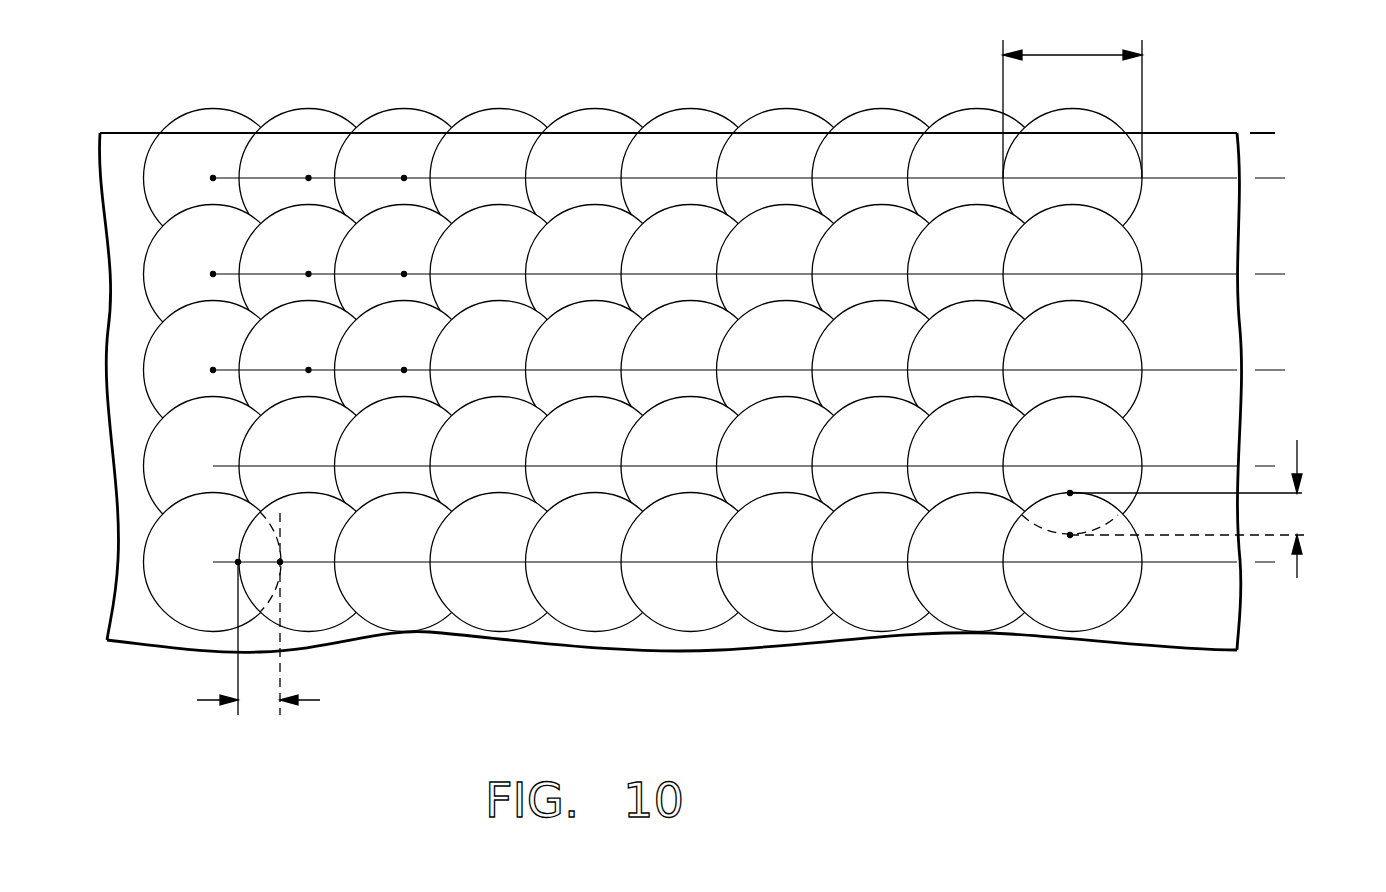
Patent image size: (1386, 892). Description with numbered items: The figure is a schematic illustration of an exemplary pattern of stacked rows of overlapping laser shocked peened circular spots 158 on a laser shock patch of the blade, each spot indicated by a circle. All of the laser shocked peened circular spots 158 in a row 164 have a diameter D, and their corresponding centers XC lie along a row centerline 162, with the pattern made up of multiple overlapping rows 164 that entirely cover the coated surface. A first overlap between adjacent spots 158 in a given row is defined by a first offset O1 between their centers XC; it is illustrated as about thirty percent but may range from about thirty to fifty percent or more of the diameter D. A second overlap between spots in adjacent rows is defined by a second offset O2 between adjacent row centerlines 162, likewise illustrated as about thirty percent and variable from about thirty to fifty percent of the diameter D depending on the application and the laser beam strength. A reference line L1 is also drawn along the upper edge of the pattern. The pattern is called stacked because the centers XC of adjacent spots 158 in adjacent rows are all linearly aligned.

The laser shocked peened circular spot 158 is at (211, 107).
The row centerline 162 is at (1270, 177).
The row of overlapping laser shock peened circular spots 164 is at (132, 162).
The center XC is at (404, 175).
The reference line L1 is at (1250, 133).
The diameter D is at (1072, 53).
The first offset O1 is at (310, 700).
The second offset O2 is at (1300, 457).